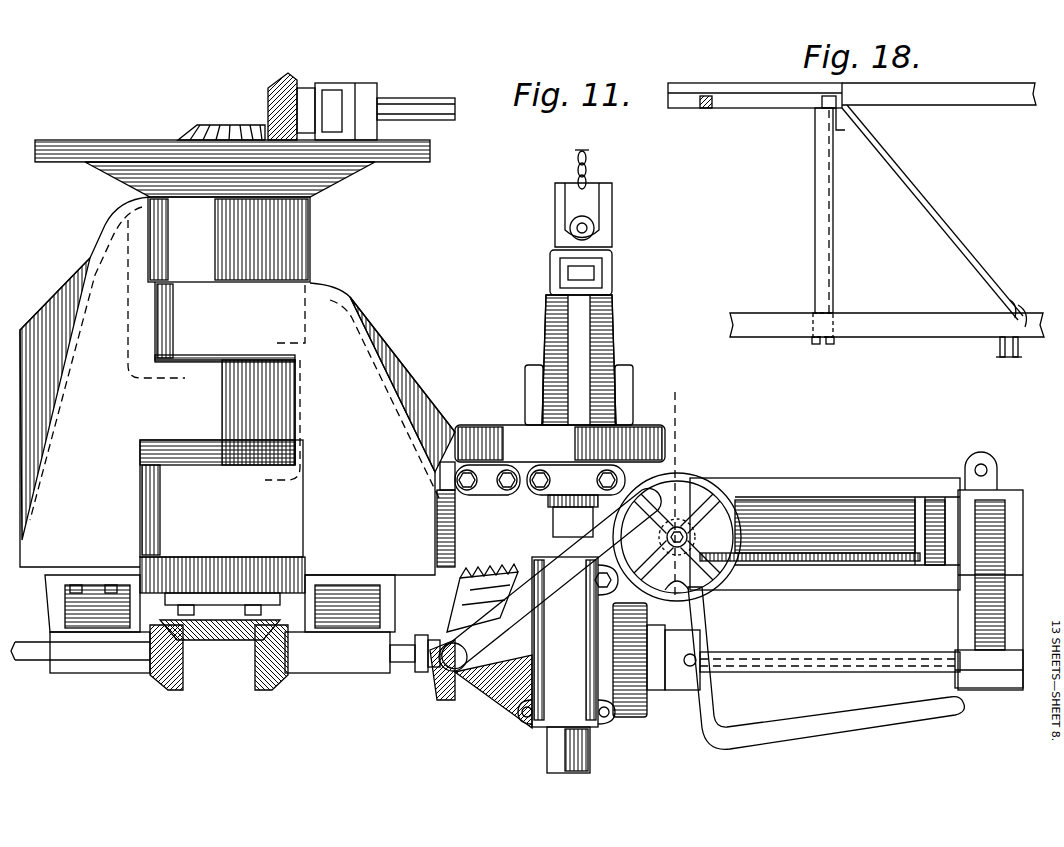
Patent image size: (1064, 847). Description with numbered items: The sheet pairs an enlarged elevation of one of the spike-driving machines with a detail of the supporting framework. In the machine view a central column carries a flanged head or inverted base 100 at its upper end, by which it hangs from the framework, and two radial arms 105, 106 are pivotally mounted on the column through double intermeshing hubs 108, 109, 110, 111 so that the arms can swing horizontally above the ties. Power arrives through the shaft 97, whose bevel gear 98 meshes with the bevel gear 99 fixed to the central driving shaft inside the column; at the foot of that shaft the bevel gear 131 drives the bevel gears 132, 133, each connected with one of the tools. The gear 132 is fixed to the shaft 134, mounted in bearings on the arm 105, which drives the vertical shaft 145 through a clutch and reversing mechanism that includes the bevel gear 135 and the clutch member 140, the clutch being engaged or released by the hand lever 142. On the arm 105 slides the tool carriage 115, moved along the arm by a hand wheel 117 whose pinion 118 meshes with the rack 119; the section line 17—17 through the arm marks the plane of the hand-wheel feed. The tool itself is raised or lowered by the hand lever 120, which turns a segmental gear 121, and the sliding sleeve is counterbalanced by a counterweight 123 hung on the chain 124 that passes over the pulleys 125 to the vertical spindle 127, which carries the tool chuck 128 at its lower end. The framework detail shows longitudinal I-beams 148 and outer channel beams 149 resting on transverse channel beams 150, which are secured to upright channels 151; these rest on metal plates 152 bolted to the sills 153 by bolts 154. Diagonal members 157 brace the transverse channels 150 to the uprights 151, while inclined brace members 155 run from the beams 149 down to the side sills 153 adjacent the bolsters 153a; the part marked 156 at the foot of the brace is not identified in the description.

In FIG. 11, the shaft 97 is at (402, 104).
In FIG. 11, the bevel gear 98 is at (276, 88).
In FIG. 11, the bevel gear 99 is at (206, 130).
In FIG. 11, the flanged head or inverted base 100 is at (84, 142).
In FIG. 11, the radial arm 105 is at (396, 344).
In FIG. 11, the radial arm 106 is at (50, 308).
In FIG. 11, the hub 108 is at (229, 239).
In FIG. 11, the hub 109 is at (241, 412).
In FIG. 11, the hub 110 is at (216, 350).
In FIG. 11, the hub 111 is at (243, 512).
In FIG. 11, the sliding head or tool carriage 115 is at (700, 482).
In FIG. 11, the hand wheel 117 is at (697, 528).
In FIG. 11, the pinion 118 is at (690, 525).
In FIG. 11, the rack 119 is at (870, 560).
In FIG. 11, the hand lever 120 is at (642, 492).
In FIG. 11, the segmental gear 121 is at (520, 690).
In FIG. 11, the counterweight 123 is at (528, 377).
In FIG. 11, the chain 124 is at (587, 160).
In FIG. 11, the pulley 125 is at (560, 192).
In FIG. 11, the vertical shaft or spindle 127 is at (584, 344).
In FIG. 11, the tool chuck or holder 128 is at (586, 748).
In FIG. 11, the bevel gear 131 is at (222, 641).
In FIG. 11, the bevel gear 132 is at (268, 691).
In FIG. 11, the bevel gear 133 is at (170, 690).
In FIG. 11, the shaft 134 is at (26, 663).
In FIG. 11, the bevel gear 135 is at (447, 698).
In FIG. 11, the clutch member 140 is at (648, 705).
In FIG. 11, the hand lever 142 is at (842, 725).
In FIG. 11, the vertical shaft 145 is at (437, 526).
In FIG. 11, the section line 17— 17 is at (700, 388).
In FIG. 18, the I-beam 148 is at (690, 110).
In FIG. 18, the channel beam 149 is at (793, 110).
In FIG. 18, the transverse beam 150 is at (840, 128).
In FIG. 18, the upright channel 151 is at (815, 218).
In FIG. 18, the metal plate 152 is at (814, 313).
In FIG. 18, the sill 153 is at (790, 330).
In FIG. 18, the bolster 153a is at (998, 358).
In FIG. 18, the bolt 154 is at (824, 344).
In FIG. 18, the inclined brace member 155 is at (915, 184).
In FIG. 18, the brace foot 156 is at (1022, 302).
In FIG. 18, the diagonal member 157 is at (834, 238).